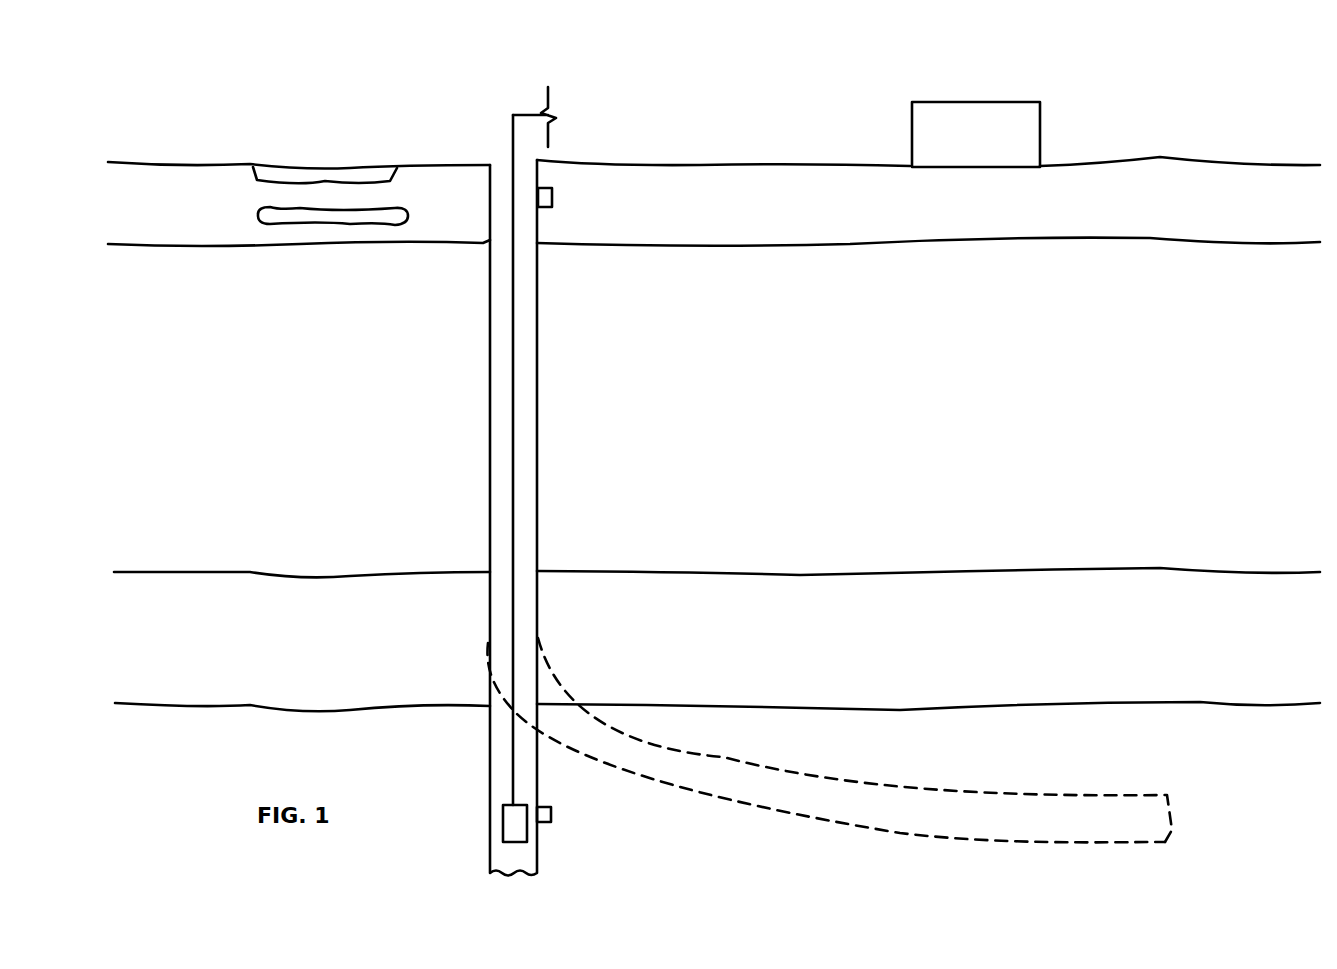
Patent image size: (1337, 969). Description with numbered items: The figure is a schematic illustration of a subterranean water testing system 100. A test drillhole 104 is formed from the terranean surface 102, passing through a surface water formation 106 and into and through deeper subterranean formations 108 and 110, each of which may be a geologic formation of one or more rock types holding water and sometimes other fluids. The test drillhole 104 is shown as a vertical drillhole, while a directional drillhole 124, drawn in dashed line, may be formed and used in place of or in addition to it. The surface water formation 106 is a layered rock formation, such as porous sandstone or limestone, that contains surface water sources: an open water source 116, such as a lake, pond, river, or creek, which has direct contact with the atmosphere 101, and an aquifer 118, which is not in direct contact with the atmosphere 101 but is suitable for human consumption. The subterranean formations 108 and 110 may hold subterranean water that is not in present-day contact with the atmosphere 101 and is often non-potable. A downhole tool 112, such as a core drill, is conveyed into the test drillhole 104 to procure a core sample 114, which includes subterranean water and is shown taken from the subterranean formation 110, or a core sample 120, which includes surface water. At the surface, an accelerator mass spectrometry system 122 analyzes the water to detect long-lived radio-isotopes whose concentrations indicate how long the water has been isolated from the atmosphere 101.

The subterranean water testing system 100 is at (1118, 95).
The atmosphere 101 is at (737, 115).
The terranean surface 102 is at (1207, 157).
The test drillhole 104 is at (537, 365).
The surface water formation 106 is at (1002, 219).
The subterranean formation 108 is at (817, 631).
The subterranean formation 110 is at (963, 751).
The downhole tool 112 is at (503, 823).
The core sample 114 is at (551, 812).
The open water source 116 is at (342, 172).
The aquifer 118 is at (367, 222).
The core sample 120 is at (552, 192).
The accelerator mass spectrometry system 122 is at (1002, 147).
The directional drillhole 124 is at (1067, 795).